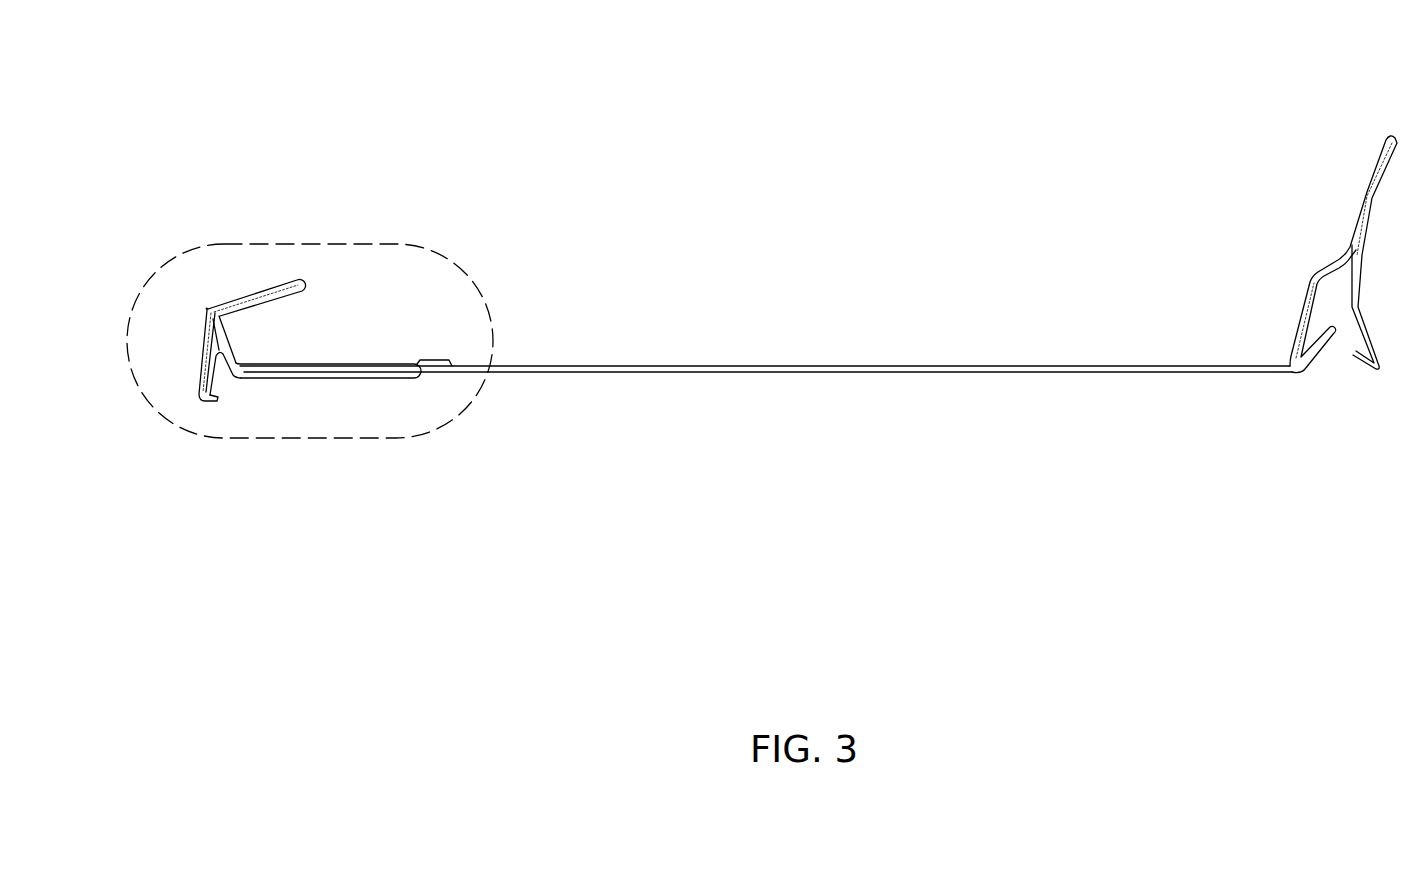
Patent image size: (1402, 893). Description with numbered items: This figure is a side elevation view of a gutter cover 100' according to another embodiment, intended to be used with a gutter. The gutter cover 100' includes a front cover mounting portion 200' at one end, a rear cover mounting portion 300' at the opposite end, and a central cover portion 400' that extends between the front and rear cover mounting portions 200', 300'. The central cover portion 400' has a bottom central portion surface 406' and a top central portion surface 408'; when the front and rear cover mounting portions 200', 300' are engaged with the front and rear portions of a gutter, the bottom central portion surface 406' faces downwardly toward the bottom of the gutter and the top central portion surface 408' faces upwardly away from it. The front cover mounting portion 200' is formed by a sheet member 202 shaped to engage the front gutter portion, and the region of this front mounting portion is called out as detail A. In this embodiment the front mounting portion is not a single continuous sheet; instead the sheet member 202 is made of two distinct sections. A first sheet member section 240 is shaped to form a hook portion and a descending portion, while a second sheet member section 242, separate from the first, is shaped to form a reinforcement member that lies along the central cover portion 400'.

The gutter cover 100' is at (734, 262).
The front cover mounting portion 200' is at (246, 336).
The base leg of clip 202 is at (178, 372).
The first sheet member section 240 is at (272, 273).
The second sheet member section 242 is at (320, 388).
The detail region A is at (437, 252).
The central cover portion 400' is at (766, 355).
The bottom central portion surface 406' is at (768, 410).
The top central portion surface 408' is at (765, 332).
The rear cover mounting portion 300' is at (1316, 251).